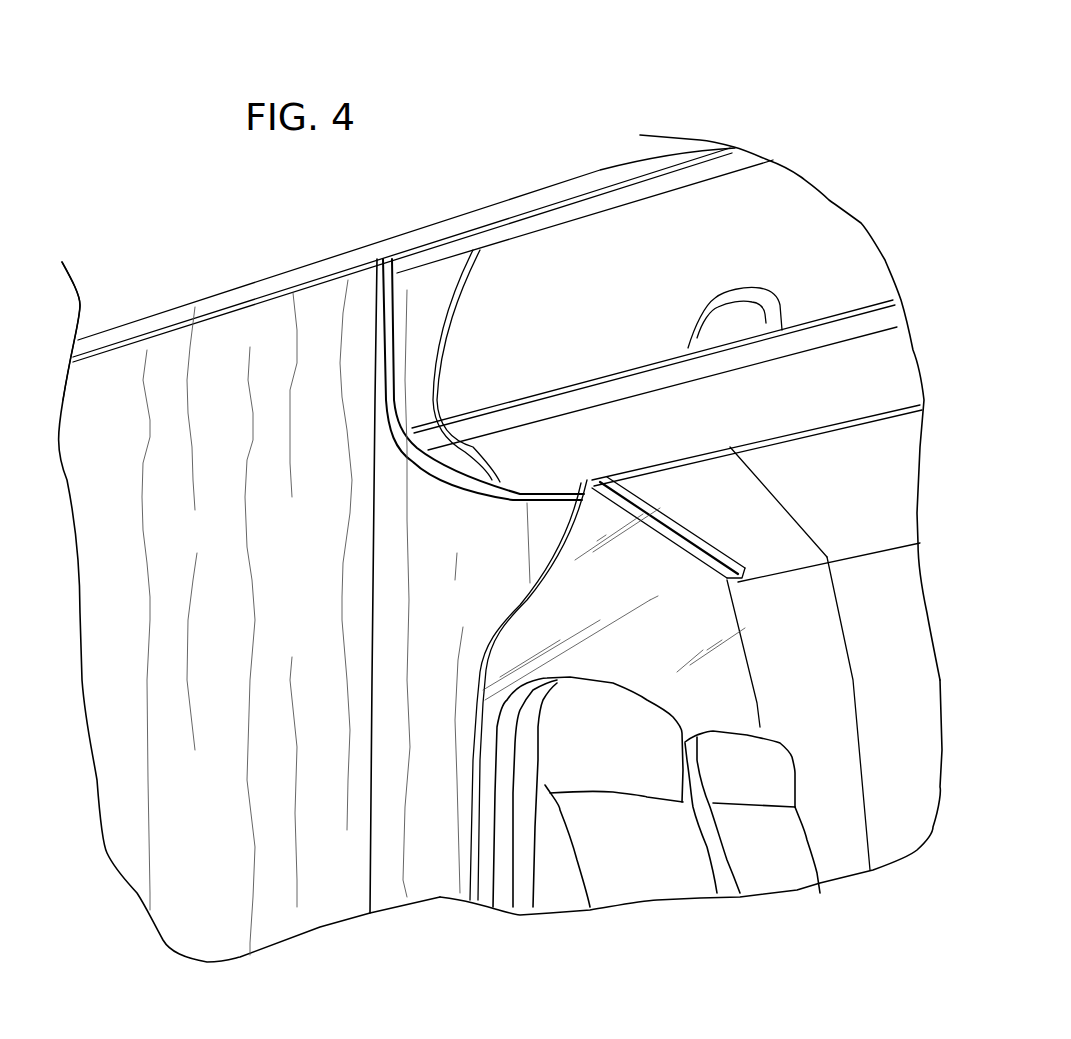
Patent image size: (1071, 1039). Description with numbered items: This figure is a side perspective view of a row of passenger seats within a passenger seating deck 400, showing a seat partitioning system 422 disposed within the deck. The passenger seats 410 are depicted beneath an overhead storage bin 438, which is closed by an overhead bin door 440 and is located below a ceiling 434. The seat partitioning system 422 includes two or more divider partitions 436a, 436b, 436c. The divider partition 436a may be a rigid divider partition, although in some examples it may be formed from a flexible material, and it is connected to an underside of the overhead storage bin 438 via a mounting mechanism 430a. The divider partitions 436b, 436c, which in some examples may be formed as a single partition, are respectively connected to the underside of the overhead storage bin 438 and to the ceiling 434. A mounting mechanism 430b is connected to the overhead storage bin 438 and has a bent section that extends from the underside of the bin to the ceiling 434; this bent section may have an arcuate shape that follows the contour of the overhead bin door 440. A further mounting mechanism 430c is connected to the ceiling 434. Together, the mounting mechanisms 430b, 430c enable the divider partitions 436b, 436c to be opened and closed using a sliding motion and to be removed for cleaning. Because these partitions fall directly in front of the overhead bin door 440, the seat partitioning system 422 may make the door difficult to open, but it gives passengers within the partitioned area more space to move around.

The passenger seating deck 400 is at (784, 76).
The seats 410 is at (663, 893).
The seat partitioning system 422 is at (200, 237).
The mounting mechanism 430a is at (720, 553).
The mounting mechanism 430b is at (483, 467).
The mounting mechanism 430c is at (313, 267).
The ceiling 434 is at (165, 275).
The divider partition 436a is at (673, 651).
The divider partition 436b is at (482, 614).
The divider partition 436c is at (215, 542).
The overhead storage bin 438 is at (802, 383).
The overhead bin door 440 is at (440, 287).